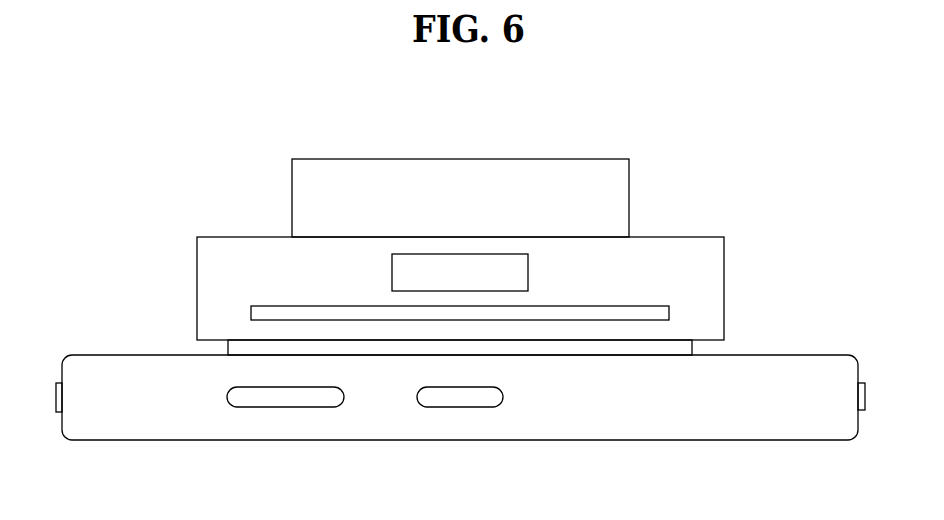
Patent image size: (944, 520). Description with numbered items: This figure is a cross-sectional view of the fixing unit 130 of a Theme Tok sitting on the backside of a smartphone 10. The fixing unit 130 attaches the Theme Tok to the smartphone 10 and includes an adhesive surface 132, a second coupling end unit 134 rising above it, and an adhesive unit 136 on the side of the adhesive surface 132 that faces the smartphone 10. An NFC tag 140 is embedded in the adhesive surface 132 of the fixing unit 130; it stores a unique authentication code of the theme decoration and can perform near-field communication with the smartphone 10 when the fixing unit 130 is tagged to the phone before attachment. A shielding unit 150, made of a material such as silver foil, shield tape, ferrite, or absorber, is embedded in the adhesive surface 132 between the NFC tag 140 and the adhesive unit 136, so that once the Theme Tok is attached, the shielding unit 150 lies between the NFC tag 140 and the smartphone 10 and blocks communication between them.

The smartphone 10 is at (662, 427).
The fixing unit 130 is at (463, 246).
The adhesive surface 132 is at (713, 287).
The second coupling end unit 134 is at (618, 198).
The adhesive unit 136 is at (683, 347).
The NFC tag 140 is at (402, 275).
The shielding unit 150 is at (260, 313).